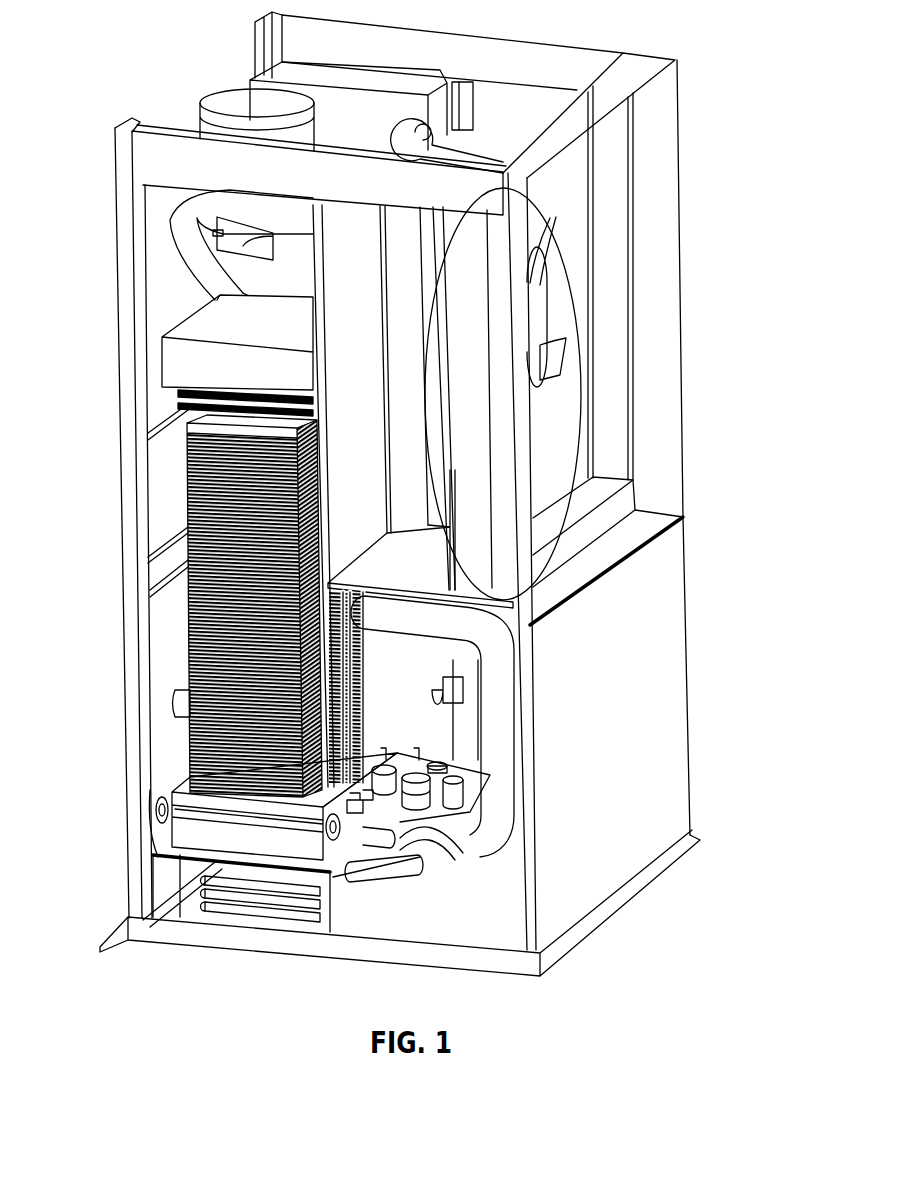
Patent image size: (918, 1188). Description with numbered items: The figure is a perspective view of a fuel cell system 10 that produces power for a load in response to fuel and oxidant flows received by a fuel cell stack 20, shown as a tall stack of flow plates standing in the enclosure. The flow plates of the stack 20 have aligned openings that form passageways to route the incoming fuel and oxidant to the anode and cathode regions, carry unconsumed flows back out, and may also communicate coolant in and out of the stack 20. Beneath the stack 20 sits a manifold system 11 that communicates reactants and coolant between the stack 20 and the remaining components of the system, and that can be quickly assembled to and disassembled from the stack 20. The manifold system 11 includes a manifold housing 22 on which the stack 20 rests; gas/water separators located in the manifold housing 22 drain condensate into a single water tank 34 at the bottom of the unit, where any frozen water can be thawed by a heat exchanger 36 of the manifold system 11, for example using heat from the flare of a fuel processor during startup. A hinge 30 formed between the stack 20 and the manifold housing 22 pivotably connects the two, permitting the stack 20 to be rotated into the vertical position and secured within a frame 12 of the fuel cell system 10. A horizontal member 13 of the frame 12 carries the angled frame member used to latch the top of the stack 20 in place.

The fuel cell system 10 is at (730, 132).
The manifold system 11 is at (152, 853).
The frame 12 is at (122, 465).
The horizontal member 13 is at (163, 427).
The fuel cell stack 20 is at (190, 633).
The manifold housing 22 is at (170, 833).
The hinge 30 is at (163, 810).
The water tank 34 is at (145, 923).
The heat exchanger 36 is at (265, 905).